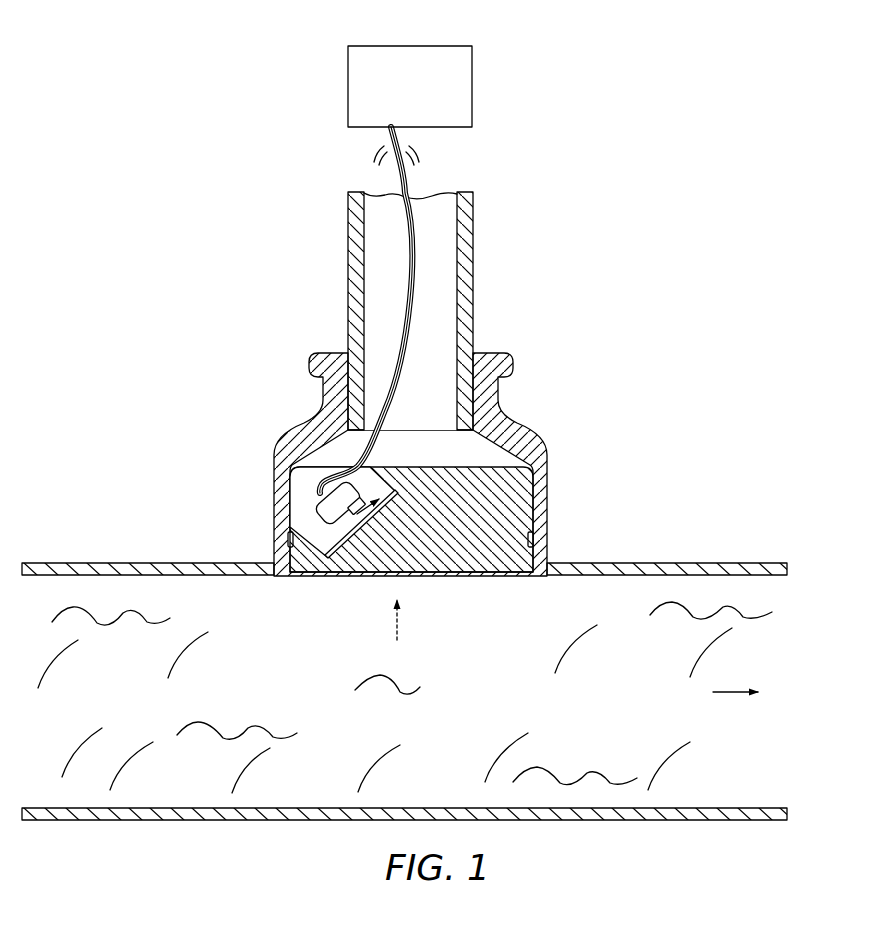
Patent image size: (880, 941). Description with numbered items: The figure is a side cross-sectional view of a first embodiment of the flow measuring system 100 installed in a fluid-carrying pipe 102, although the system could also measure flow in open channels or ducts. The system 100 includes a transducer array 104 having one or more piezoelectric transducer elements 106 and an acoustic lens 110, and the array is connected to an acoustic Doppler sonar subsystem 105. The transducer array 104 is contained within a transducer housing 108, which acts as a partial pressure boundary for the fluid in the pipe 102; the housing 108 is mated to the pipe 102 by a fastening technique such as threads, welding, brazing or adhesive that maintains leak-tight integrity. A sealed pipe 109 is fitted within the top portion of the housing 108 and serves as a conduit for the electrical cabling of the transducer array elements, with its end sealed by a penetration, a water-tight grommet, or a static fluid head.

The flow measuring system 100 is at (200, 126).
The pipe 102 is at (653, 562).
The transducer array 104 is at (426, 620).
The acoustic Doppler sonar subsystem 105 is at (472, 92).
The piezoelectric transducer element 106 is at (322, 538).
The transducer housing 108 is at (515, 423).
The sealed pipe 109 is at (352, 280).
The acoustic lens 110 is at (518, 497).